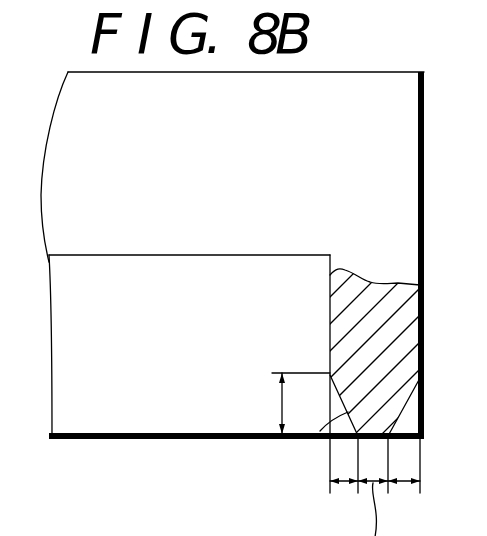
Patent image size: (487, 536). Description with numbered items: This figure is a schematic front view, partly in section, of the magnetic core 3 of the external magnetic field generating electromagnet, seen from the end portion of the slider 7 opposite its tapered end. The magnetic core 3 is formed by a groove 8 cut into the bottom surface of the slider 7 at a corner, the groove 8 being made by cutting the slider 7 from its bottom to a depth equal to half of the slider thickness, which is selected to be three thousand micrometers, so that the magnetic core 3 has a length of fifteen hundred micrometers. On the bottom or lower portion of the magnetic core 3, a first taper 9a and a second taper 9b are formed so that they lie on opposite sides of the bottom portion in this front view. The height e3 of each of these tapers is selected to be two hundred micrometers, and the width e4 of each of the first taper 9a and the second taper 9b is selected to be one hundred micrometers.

The slider 7 is at (322, 77).
The groove 8 is at (157, 420).
The magnetic core 3 is at (403, 331).
The first taper 9a is at (320, 432).
The second taper 9b is at (400, 419).
The height of the tapers e3 is at (287, 403).
The width of the tapers e4 is at (343, 483).